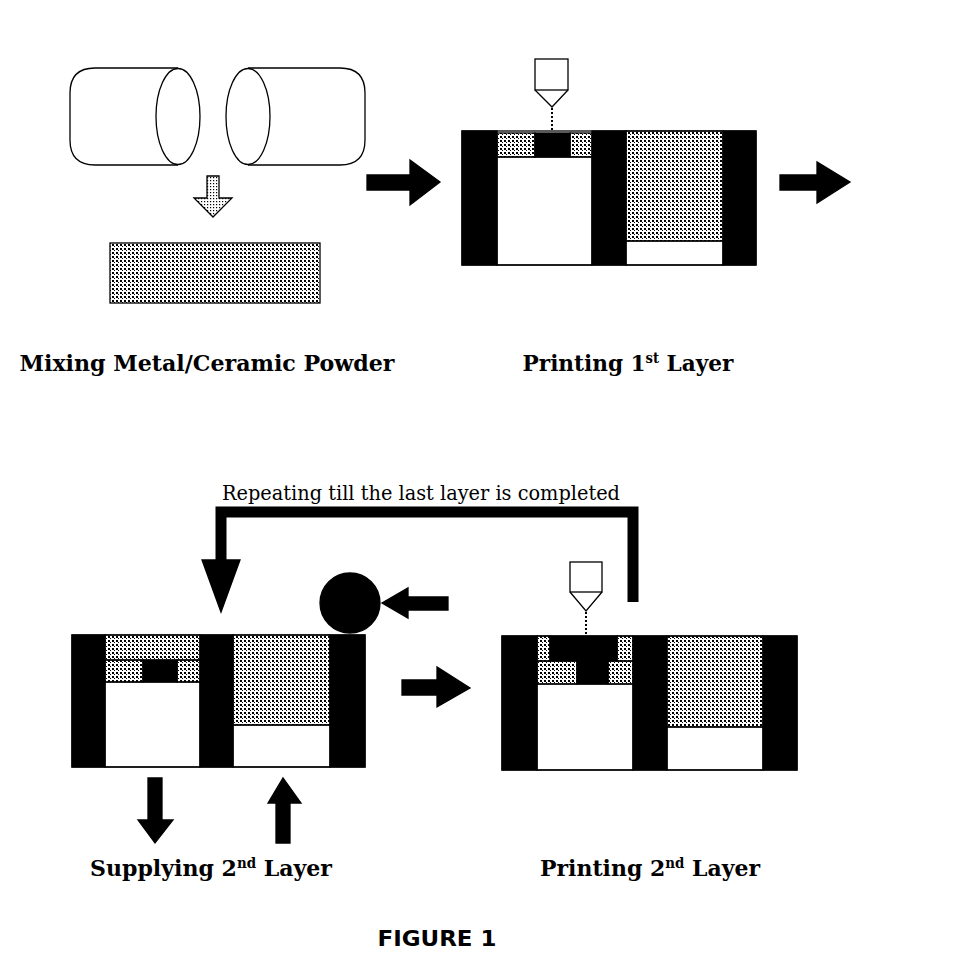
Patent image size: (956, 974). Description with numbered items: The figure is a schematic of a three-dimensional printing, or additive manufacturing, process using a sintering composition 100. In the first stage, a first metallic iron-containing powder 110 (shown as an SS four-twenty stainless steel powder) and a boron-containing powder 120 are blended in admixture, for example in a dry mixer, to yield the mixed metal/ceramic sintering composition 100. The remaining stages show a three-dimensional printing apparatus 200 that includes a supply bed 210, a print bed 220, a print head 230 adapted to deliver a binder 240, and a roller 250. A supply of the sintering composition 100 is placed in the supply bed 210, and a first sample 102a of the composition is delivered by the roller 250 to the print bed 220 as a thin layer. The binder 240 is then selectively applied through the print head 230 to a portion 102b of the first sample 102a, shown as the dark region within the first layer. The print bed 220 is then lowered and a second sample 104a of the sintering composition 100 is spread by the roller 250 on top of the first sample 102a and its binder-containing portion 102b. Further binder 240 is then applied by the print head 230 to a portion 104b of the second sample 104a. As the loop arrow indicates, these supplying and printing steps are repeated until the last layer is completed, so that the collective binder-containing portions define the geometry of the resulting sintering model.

The sintering composition 100 is at (272, 253).
The first metallic iron-containing powder 110 is at (140, 76).
The boron-containing powder 120 is at (310, 80).
The first sample 102a is at (513, 145).
The portion 102b is at (540, 160).
The second sample 104a is at (130, 660).
The portion 104b is at (602, 636).
The three-dimensional printing apparatus 200 is at (699, 64).
The supply bed 210 is at (678, 283).
The print bed 220 is at (539, 241).
The print head 230 is at (557, 311).
The binder 240 is at (560, 116).
The roller 250 is at (349, 582).